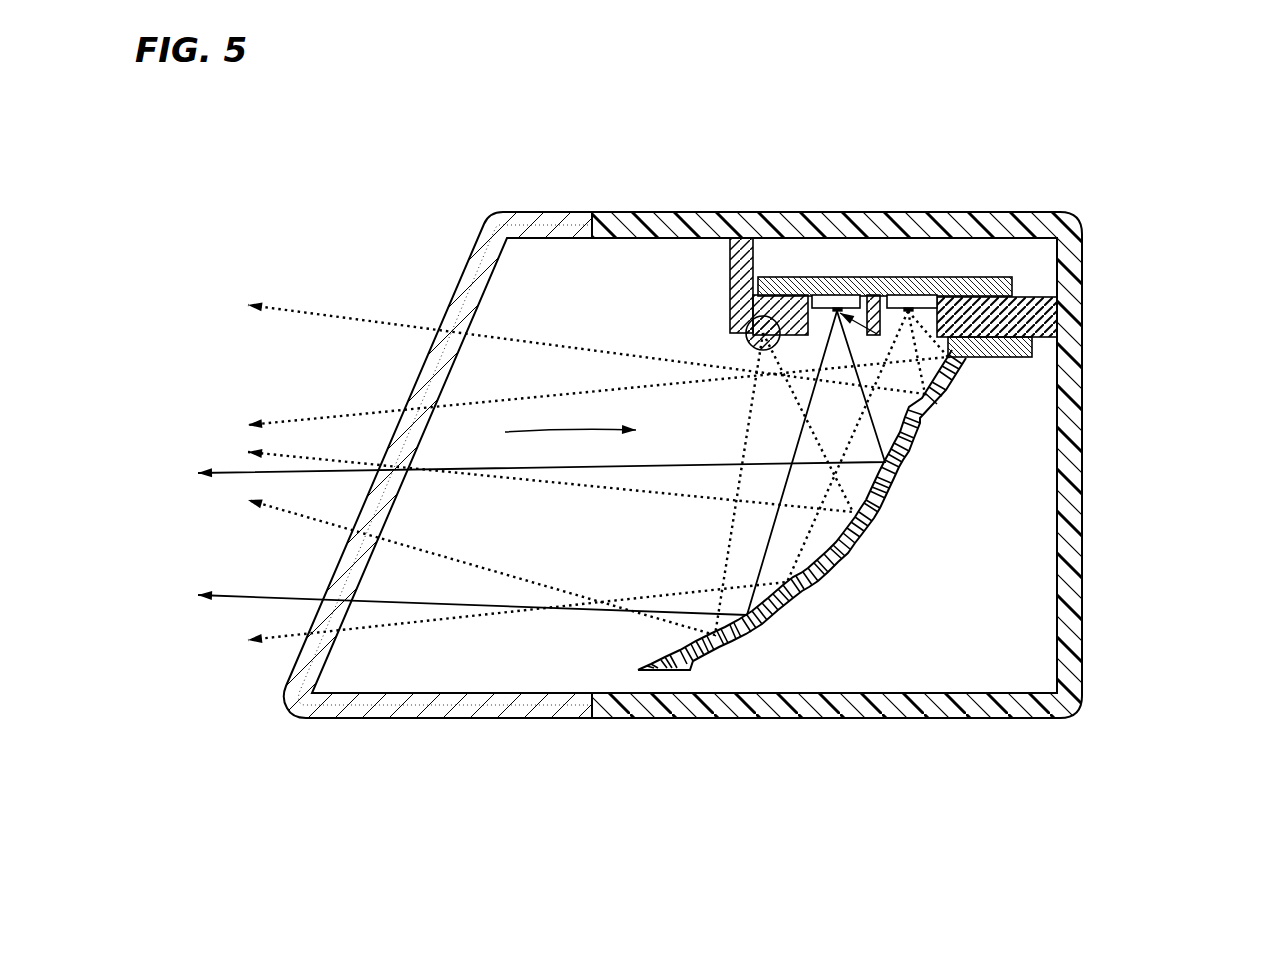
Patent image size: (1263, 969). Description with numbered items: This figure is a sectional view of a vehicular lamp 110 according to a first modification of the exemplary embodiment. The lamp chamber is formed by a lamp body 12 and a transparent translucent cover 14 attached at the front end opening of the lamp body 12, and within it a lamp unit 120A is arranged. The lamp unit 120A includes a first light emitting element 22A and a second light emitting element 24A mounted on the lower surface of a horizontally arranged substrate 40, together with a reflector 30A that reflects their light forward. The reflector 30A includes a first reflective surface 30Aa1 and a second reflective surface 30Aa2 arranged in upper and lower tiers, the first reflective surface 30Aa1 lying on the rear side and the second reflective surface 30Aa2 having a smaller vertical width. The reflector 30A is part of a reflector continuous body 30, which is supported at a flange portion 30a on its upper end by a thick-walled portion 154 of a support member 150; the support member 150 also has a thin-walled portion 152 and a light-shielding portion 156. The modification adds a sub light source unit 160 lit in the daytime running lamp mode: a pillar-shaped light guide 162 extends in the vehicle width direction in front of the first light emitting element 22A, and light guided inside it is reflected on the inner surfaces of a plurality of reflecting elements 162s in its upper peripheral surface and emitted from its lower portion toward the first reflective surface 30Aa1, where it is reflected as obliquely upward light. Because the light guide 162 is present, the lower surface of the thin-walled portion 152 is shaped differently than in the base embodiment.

The vehicular lamp 110 is at (368, 160).
The lamp body 12 is at (1084, 253).
The translucent cover 14 is at (455, 290).
The first light emitting element 22A is at (843, 290).
The second light emitting element 24A is at (917, 290).
The substrate 40 is at (995, 275).
The support member 150 is at (875, 302).
The thin-walled portion 152 is at (778, 277).
The thick-walled portion 154 is at (1040, 320).
The light-shielding portion 156 is at (877, 337).
The sub light source unit 160 is at (717, 364).
The light guide 162 is at (747, 342).
The reflecting elements 162s is at (717, 316).
The lamp unit 120A is at (538, 437).
The reflector continuous body 30 is at (838, 507).
The reflector 30A is at (828, 510).
The first reflective surface 30Aa1 is at (813, 557).
The second reflective surface 30Aa2 is at (903, 458).
The flange portion 30a is at (995, 357).